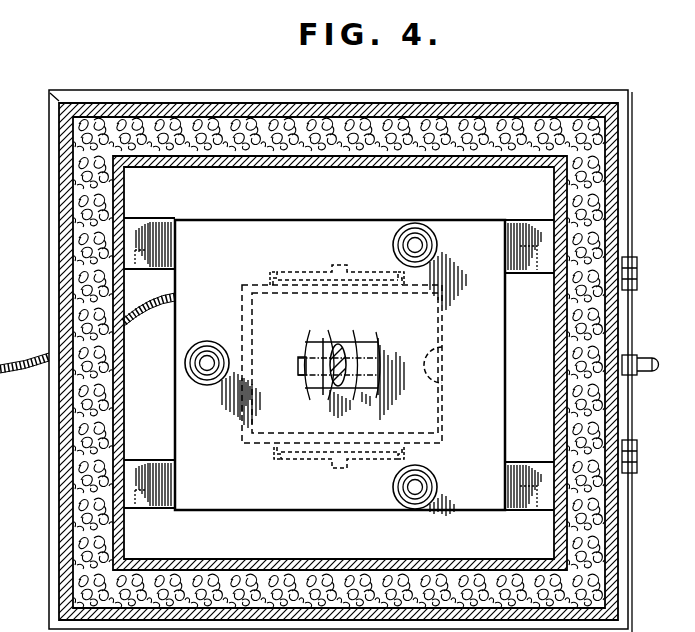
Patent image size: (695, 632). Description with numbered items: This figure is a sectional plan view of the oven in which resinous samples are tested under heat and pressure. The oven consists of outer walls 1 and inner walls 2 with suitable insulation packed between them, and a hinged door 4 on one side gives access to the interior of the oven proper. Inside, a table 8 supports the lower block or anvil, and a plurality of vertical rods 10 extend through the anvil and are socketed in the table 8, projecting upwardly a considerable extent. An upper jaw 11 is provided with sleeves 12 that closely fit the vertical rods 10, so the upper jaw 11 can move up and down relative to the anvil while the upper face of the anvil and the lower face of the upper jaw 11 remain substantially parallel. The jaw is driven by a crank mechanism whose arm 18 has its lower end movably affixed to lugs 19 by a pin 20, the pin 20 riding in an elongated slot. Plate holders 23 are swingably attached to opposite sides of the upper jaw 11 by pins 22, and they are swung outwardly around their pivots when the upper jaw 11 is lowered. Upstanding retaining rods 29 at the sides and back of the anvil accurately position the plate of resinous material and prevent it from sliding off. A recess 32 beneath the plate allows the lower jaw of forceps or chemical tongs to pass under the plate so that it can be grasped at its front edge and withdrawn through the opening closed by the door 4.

The outer walls 1 is at (183, 103).
The inner walls 2 is at (250, 167).
The hinged door 4 is at (640, 270).
The table 8 is at (152, 220).
The vertical rods 10 is at (416, 238).
The upper jaw 11 is at (505, 365).
The sleeves 12 is at (430, 232).
The arm 18 is at (338, 344).
The lugs 19 is at (305, 344).
The pin 20 is at (300, 374).
The pins 22 is at (274, 280).
The plate holders 23 is at (315, 272).
The retaining rods 29 is at (262, 294).
The recess 32 is at (440, 352).